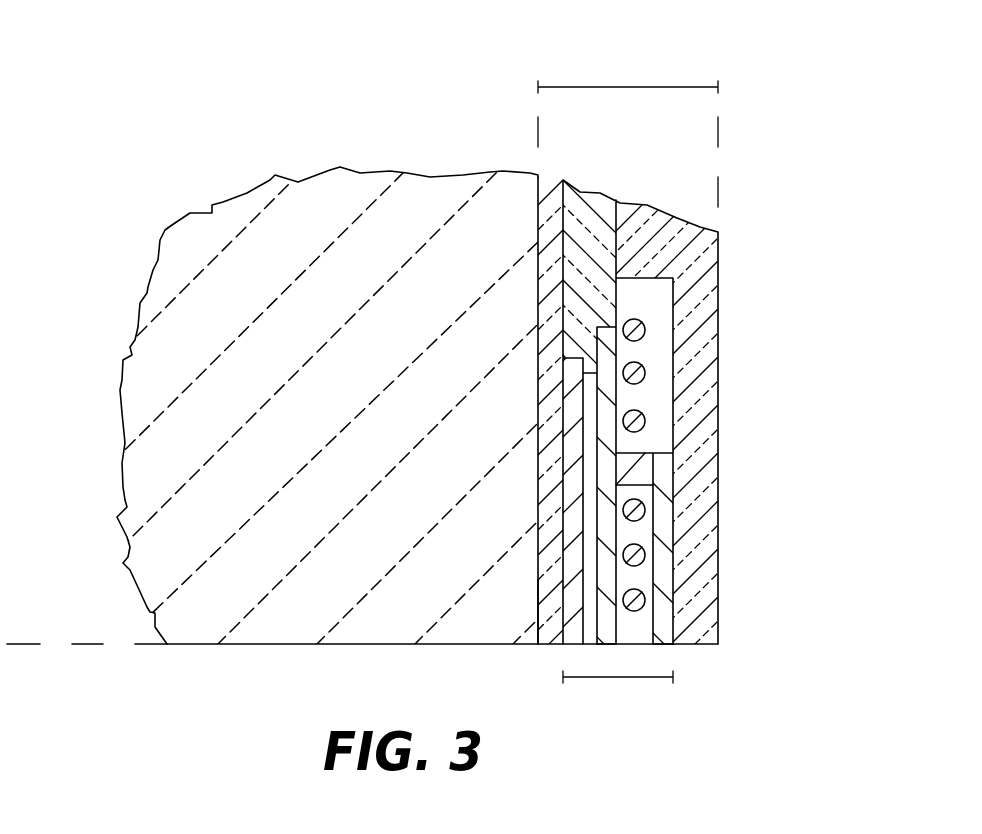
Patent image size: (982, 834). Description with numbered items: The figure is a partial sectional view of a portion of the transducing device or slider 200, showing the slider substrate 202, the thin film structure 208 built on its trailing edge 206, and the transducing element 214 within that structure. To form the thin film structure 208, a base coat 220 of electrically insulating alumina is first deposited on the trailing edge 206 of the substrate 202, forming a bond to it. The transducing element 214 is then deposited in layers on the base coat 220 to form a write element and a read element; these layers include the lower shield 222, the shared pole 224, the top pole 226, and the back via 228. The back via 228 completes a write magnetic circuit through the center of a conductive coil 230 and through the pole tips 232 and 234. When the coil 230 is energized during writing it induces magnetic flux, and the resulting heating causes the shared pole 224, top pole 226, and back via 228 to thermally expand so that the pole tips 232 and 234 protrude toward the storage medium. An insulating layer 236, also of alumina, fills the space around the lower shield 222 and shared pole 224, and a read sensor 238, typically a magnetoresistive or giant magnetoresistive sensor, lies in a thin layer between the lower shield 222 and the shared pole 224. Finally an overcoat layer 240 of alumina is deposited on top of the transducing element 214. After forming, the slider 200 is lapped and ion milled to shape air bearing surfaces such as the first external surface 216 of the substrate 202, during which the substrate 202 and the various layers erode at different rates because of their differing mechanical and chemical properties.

The slider 200 is at (789, 172).
The slider substrate 202 is at (200, 338).
The trailing edge 206 is at (535, 597).
The thin film structure 208 is at (603, 86).
The transducing element 214 is at (617, 678).
The first external surface 216 is at (278, 647).
The base coat 220 is at (546, 176).
The lower shield 222 is at (570, 513).
The shared pole 224 is at (605, 460).
The top pole 226 is at (663, 575).
The back via 228 is at (642, 473).
The conductive coil 230 is at (643, 368).
The pole tip 232 is at (610, 643).
The pole tip 234 is at (663, 645).
The insulating layer 236 is at (588, 228).
The read sensor 238 is at (590, 607).
The overcoat layer 240 is at (683, 253).